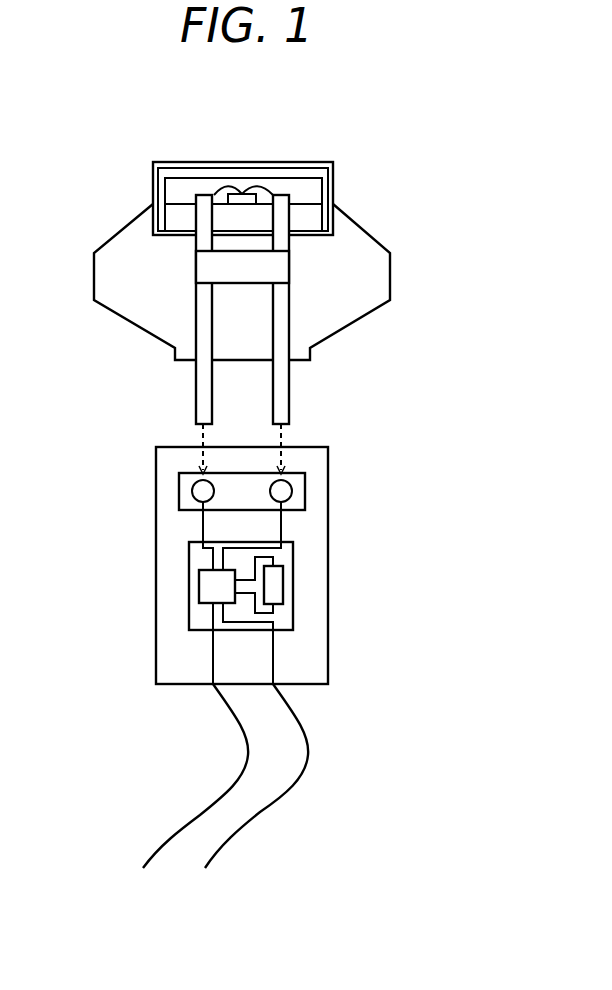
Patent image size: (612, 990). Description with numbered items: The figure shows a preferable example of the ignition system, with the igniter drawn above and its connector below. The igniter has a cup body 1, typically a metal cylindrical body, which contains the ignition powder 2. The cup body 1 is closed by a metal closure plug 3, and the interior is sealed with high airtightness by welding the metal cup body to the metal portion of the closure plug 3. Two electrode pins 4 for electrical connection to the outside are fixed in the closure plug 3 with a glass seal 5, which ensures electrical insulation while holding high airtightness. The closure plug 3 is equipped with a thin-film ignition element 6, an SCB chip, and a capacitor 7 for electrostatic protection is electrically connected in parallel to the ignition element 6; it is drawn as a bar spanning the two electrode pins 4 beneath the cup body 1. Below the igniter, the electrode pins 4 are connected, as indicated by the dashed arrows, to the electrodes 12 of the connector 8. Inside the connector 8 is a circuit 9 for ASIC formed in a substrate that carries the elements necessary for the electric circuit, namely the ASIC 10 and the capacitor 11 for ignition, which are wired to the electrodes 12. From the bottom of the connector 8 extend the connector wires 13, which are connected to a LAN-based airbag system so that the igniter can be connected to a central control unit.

The cup body 1 is at (191, 172).
The ignition powder 2 is at (293, 183).
The closure plug 3 is at (307, 217).
The electrode pins 4 is at (205, 378).
The glass seal 5 is at (193, 217).
The thin-film ignition element 6 is at (243, 196).
The capacitor for electrostatic protection 7 is at (290, 258).
The connector 8 is at (165, 525).
The circuit for ASIC 9 is at (288, 560).
The ASIC 10 is at (207, 585).
The capacitor for ignition 11 is at (278, 595).
The electrodes 12 is at (200, 490).
The connector wires 13 is at (218, 798).